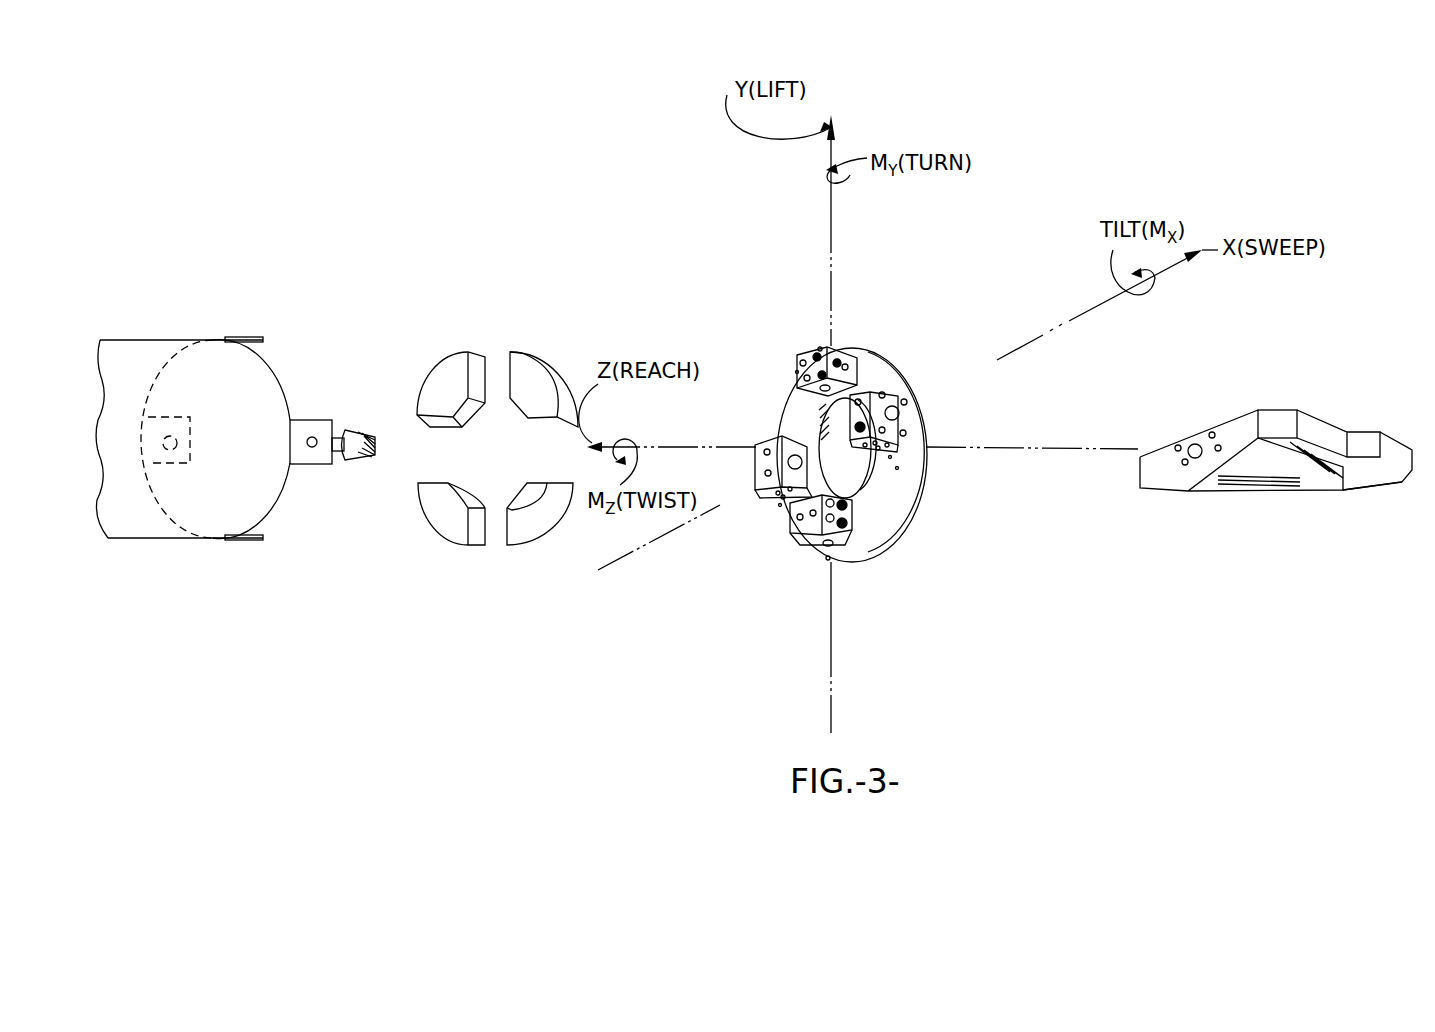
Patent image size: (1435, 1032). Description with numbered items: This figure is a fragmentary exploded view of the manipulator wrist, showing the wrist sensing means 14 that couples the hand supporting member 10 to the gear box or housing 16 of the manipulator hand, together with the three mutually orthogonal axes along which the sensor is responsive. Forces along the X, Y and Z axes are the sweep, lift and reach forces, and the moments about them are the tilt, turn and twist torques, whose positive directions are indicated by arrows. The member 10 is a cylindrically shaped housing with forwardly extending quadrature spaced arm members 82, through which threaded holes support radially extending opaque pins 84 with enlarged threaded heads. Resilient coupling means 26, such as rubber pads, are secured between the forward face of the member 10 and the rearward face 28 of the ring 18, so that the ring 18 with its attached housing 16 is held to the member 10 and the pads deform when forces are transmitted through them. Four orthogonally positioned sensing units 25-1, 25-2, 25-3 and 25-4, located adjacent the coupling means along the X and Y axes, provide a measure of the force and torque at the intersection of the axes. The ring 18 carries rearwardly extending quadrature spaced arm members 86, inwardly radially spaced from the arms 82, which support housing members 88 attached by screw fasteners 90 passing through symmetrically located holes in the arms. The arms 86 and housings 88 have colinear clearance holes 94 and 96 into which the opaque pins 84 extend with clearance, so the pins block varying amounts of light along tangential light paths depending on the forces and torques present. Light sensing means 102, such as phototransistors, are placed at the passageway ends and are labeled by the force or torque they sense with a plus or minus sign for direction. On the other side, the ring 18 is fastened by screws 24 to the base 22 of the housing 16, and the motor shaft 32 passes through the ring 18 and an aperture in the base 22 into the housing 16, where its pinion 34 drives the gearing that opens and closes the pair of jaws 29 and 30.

The hand supporting member 10 is at (130, 340).
The arm members 82 is at (253, 338).
The opaque pins 84 is at (312, 436).
The motor shaft 32 is at (338, 433).
The pinion 34 is at (366, 431).
The resilient coupling means 26 is at (525, 352).
The ring 18 is at (905, 373).
The sensing unit 25-1 is at (788, 353).
The sensing unit 25-2 is at (874, 385).
The sensing unit 25-3 is at (838, 548).
The sensing unit 25-4 is at (745, 502).
The arm members 86 is at (820, 345).
The housing members 88 is at (797, 372).
The clearance holes 96 is at (823, 388).
The screw fasteners 90 is at (907, 401).
The clearance holes 94 is at (899, 413).
The rearward face 28 is at (890, 457).
The wrist sensing means 14 is at (648, 597).
The light sensing means 102 is at (800, 350).
The base 22 is at (1236, 432).
The housing 16 is at (1278, 408).
The jaw 30 is at (1388, 430).
The screws 24 is at (1217, 445).
The jaw 29 is at (1354, 491).